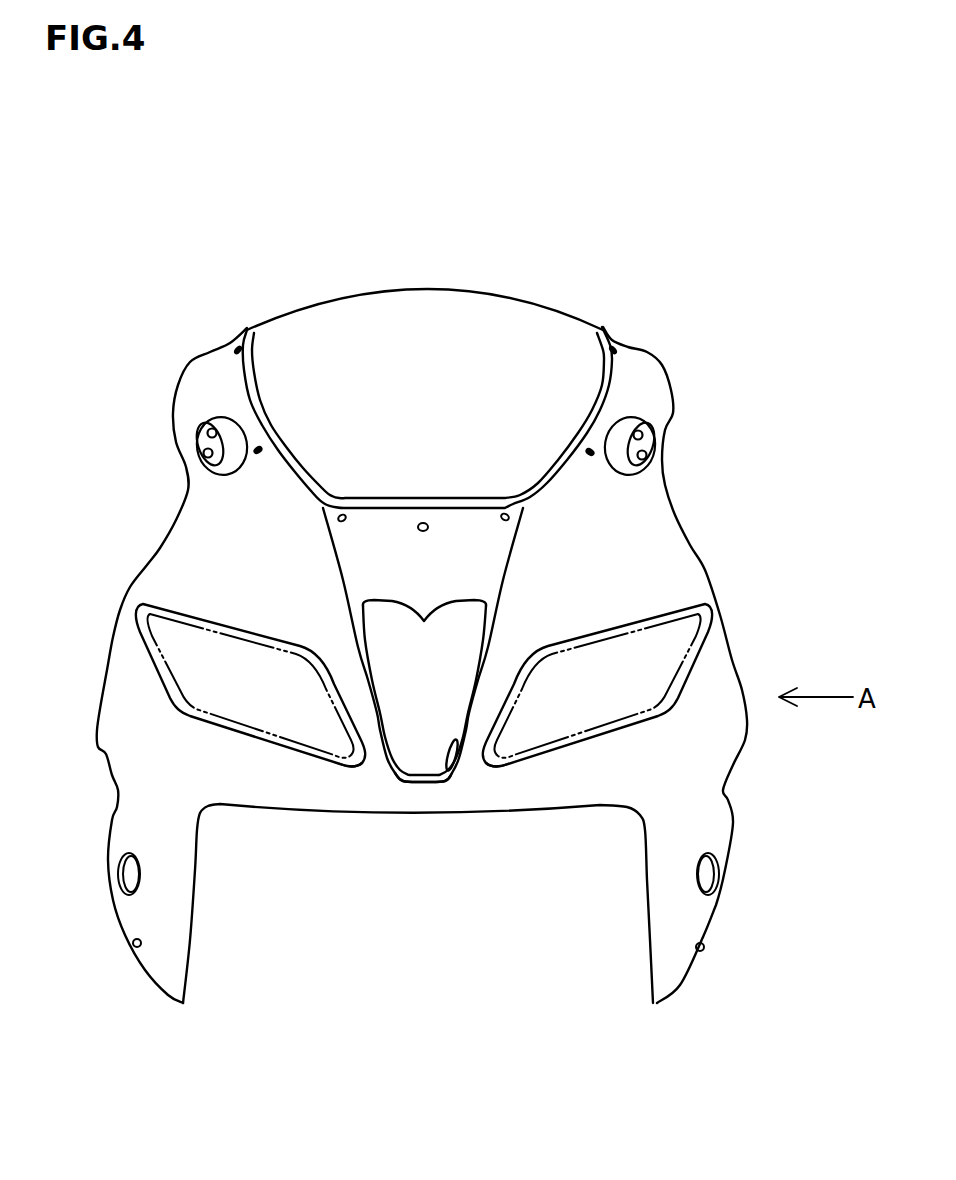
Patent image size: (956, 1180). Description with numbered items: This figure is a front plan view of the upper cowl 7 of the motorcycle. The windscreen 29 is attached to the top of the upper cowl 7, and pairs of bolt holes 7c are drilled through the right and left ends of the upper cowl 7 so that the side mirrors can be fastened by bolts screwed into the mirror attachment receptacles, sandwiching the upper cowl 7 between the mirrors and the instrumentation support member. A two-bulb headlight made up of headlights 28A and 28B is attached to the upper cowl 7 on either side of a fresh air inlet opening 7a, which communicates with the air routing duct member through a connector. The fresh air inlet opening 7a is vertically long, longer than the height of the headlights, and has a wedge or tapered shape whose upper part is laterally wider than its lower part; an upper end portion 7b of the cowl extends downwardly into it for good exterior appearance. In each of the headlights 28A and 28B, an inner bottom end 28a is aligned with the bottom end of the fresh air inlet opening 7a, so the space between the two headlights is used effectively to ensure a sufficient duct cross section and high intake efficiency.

The upper cowl 7 is at (685, 530).
The windscreen 29 is at (429, 332).
The bolt holes 7c is at (195, 448).
The headlight 28A is at (177, 640).
The headlight 28B is at (680, 643).
The inner bottom end 28a is at (360, 766).
The upper end portion 7b is at (421, 603).
The fresh air inlet opening 7a is at (441, 780).